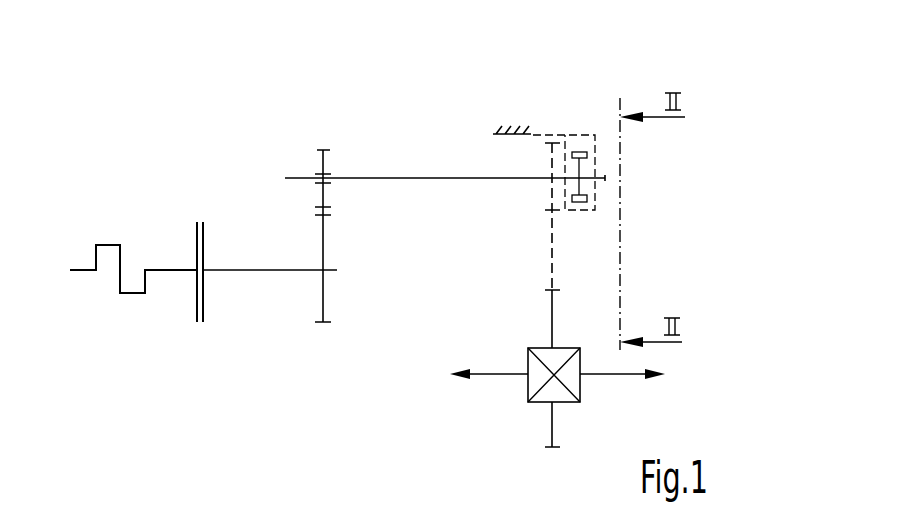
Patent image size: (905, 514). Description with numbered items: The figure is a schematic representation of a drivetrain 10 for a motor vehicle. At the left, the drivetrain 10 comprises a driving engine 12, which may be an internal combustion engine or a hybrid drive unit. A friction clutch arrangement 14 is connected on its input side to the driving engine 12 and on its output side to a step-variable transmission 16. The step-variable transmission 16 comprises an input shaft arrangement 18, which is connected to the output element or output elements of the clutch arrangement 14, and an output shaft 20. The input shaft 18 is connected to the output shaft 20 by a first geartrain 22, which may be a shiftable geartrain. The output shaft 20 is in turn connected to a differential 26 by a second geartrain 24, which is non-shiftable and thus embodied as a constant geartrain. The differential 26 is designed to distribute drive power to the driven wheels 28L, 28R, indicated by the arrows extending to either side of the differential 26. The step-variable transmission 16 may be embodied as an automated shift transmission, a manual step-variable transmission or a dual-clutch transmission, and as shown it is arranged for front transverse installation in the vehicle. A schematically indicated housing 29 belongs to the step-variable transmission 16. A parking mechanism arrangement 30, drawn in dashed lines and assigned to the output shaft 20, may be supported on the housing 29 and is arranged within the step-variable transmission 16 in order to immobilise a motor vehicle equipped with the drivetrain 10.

The drivetrain 10 is at (651, 204).
The driving engine 12 is at (107, 243).
The clutch arrangement 14 is at (193, 244).
The step-variable transmission 16 is at (260, 142).
The input shaft arrangement 18 is at (267, 272).
The output shaft 20 is at (420, 178).
The first geartrain 22 is at (324, 134).
The second geartrain 24 is at (553, 108).
The differential 26 is at (525, 387).
The driven wheel 28L is at (487, 372).
The driven wheel 28R is at (618, 377).
The housing 29 is at (497, 131).
The parking mechanism arrangement 30 is at (591, 112).